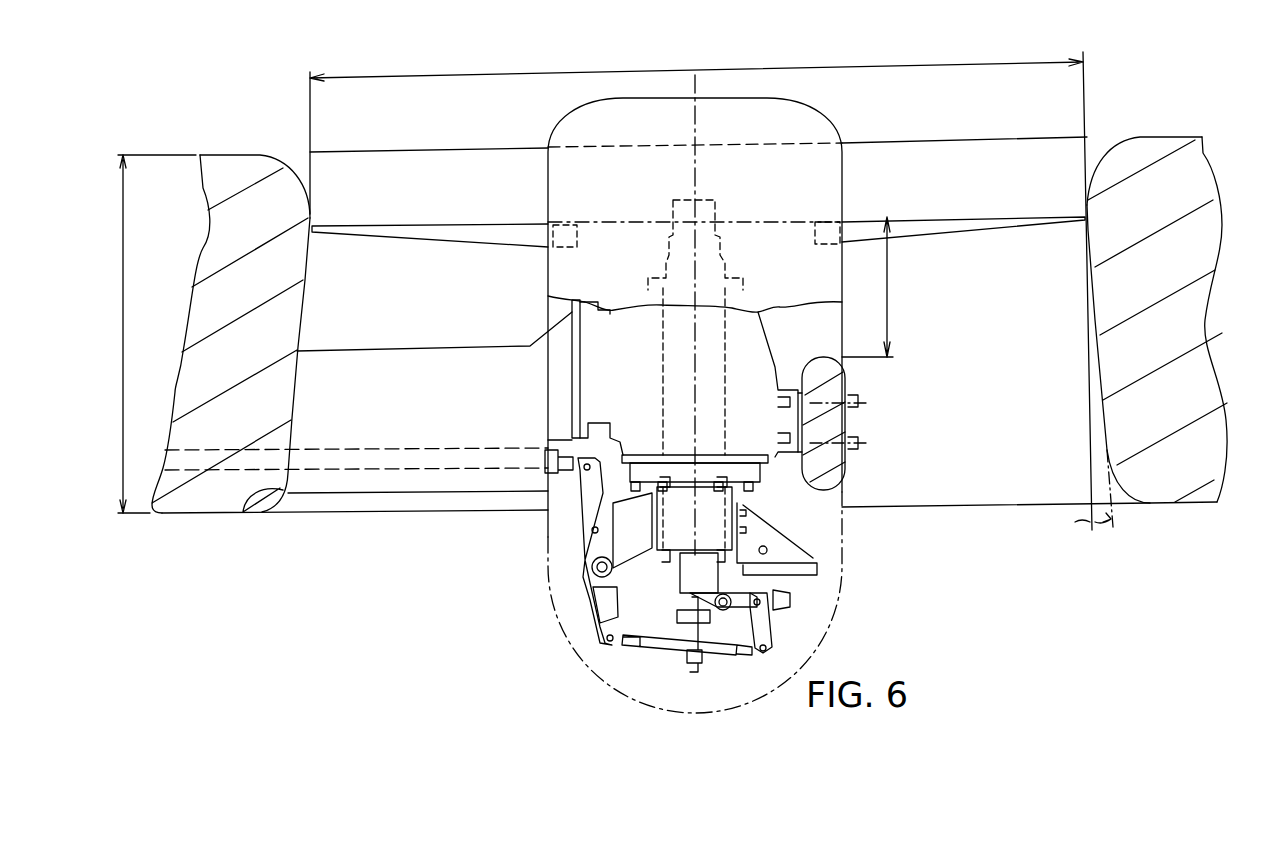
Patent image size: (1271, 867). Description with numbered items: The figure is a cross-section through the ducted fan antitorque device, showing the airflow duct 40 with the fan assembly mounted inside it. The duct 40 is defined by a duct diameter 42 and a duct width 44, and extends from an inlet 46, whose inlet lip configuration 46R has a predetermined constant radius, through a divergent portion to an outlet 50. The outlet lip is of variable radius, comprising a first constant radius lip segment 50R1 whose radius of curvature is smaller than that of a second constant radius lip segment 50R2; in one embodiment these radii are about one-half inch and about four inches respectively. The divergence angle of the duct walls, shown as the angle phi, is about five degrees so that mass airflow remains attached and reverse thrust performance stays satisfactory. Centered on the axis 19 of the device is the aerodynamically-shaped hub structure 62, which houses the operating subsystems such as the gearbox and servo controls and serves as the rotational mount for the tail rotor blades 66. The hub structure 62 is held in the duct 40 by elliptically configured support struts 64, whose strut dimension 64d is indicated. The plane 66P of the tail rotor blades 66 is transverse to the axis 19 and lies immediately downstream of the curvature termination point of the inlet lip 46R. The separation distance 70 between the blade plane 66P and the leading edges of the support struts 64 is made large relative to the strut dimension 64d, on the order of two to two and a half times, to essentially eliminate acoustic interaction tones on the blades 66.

The axis 19 is at (697, 90).
The airflow duct 40 is at (955, 487).
The duct diameter 42 is at (803, 72).
The duct width 44 is at (125, 252).
The inlet 46 is at (301, 165).
The inlet lip configuration 46R is at (1123, 158).
The outlet 50 is at (296, 512).
The first constant radius lip segment 50R1 is at (243, 513).
The second constant radius lip segment 50R2 is at (1144, 484).
The hub structure 62 is at (846, 88).
The support struts 64 is at (850, 414).
The strut dimension 64d is at (847, 366).
The tail rotor blades 66 is at (450, 224).
The plane of the tail rotor blades 66P is at (945, 216).
The separation distance 70 is at (890, 300).